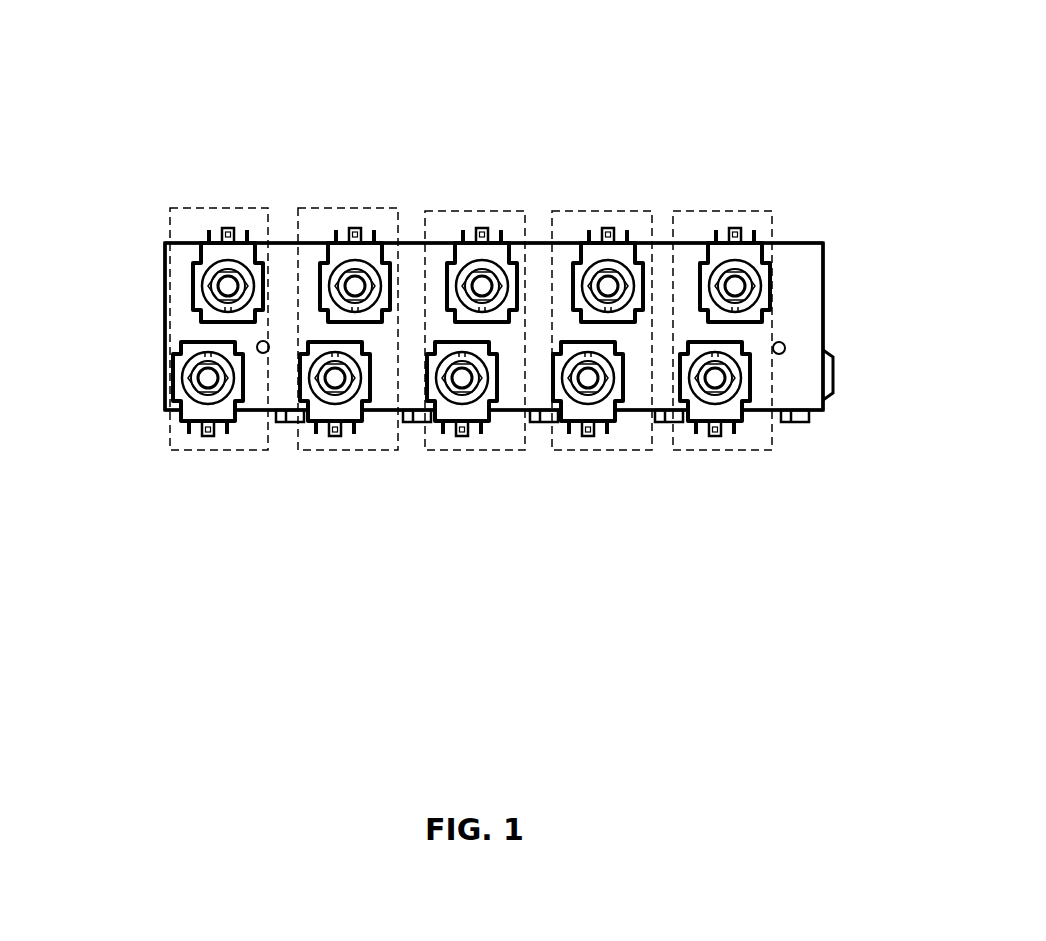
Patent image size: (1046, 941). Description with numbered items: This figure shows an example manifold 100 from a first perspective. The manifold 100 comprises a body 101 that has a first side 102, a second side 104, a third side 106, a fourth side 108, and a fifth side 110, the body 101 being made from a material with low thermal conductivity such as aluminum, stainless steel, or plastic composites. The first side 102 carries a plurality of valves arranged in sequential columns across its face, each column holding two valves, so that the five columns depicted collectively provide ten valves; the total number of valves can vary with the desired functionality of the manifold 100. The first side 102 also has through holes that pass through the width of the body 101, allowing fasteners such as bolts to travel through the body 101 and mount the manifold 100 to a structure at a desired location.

The manifold 100 is at (437, 57).
The body 101 is at (163, 241).
The first side 102 is at (184, 288).
The second side 104 is at (762, 412).
The third side 106 is at (578, 241).
The fourth side 108 is at (155, 338).
The fifth side 110 is at (826, 300).